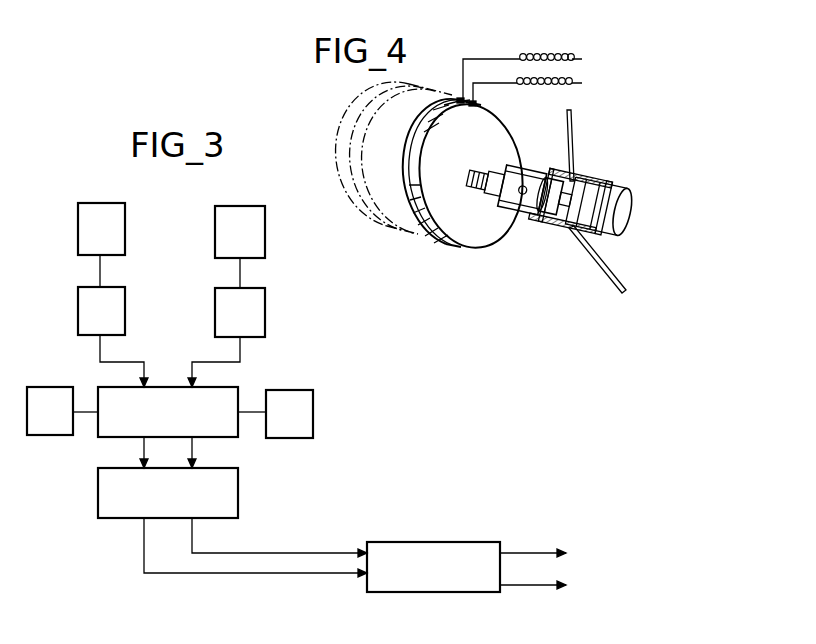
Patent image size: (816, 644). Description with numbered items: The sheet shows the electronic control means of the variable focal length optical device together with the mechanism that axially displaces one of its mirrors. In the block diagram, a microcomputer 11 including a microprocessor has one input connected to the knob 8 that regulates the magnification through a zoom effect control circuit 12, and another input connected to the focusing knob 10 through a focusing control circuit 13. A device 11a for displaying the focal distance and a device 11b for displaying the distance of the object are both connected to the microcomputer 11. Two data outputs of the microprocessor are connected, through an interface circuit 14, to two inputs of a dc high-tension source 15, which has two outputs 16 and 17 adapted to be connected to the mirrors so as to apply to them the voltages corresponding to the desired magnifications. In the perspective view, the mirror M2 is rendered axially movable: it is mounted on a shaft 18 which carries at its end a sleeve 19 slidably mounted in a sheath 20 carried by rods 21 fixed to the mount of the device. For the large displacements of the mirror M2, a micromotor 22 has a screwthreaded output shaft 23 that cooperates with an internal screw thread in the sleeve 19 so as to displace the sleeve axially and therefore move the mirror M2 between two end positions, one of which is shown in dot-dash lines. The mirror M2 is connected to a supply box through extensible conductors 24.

In FIG. 3, the knob 8 is at (125, 232).
In FIG. 3, the focusing knob 10 is at (265, 238).
In FIG. 3, the zoom effect control circuit 12 is at (125, 315).
In FIG. 3, the focusing control circuit 13 is at (265, 317).
In FIG. 3, the microcomputer 11 is at (168, 412).
In FIG. 3, the device for displaying the focal distance 11a is at (47, 396).
In FIG. 3, the device for displaying the distance of the object 11b is at (292, 402).
In FIG. 3, the interface circuit 14 is at (168, 493).
In FIG. 3, the dc high-tension source 15 is at (433, 567).
In FIG. 3, the output 16 is at (537, 554).
In FIG. 3, the output 17 is at (531, 590).
In FIG. 4, the shaft 18 is at (478, 193).
In FIG. 4, the sleeve 19 is at (530, 188).
In FIG. 4, the sheath 20 is at (597, 180).
In FIG. 4, the rods 21 is at (573, 140).
In FIG. 4, the micromotor 22 is at (617, 208).
In FIG. 4, the output shaft 23 is at (560, 185).
In FIG. 4, the extensible conductors 24 is at (490, 83).
In FIG. 4, the mirror M2 is at (460, 228).